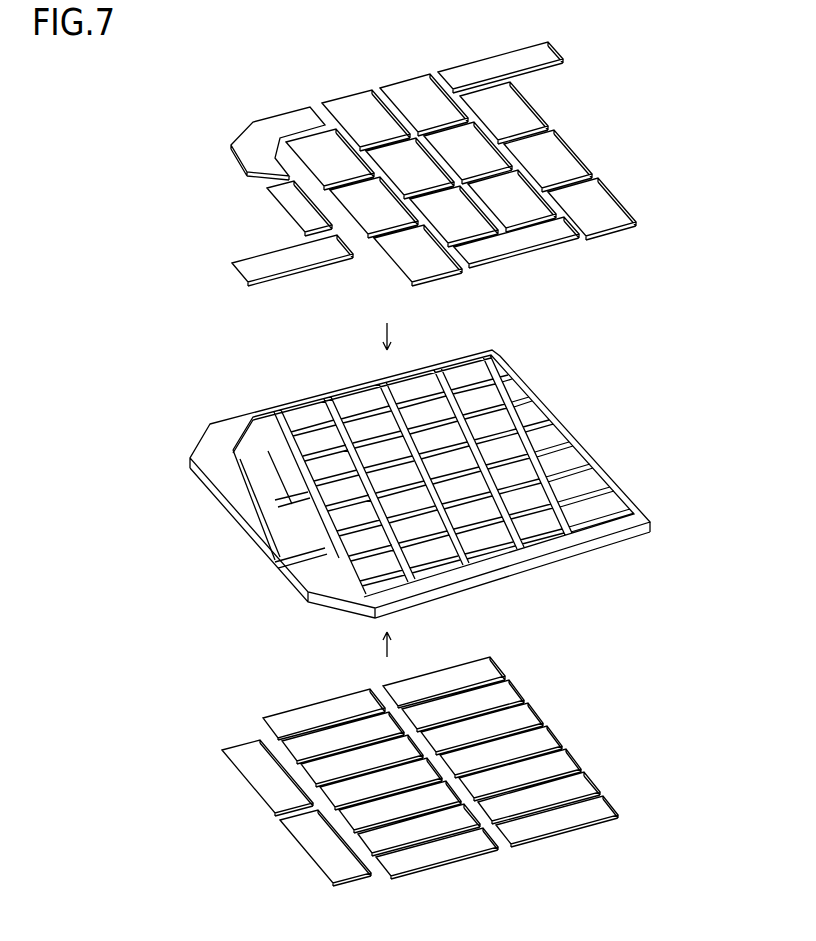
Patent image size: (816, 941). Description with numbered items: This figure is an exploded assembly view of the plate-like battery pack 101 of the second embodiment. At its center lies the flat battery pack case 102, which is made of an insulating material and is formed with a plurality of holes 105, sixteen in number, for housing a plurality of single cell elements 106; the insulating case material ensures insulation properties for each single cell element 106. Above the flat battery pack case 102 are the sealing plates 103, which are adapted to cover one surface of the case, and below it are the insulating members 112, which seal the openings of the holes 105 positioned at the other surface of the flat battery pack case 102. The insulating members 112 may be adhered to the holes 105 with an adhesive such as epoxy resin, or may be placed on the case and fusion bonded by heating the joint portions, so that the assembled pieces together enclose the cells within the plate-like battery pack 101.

The plate-like battery pack 101 is at (699, 92).
The flat battery pack case 102 is at (223, 442).
The sealing plates 103 is at (282, 128).
The holes 105 is at (232, 480).
The single cell elements 106 is at (265, 483).
The insulating members 112 is at (540, 742).